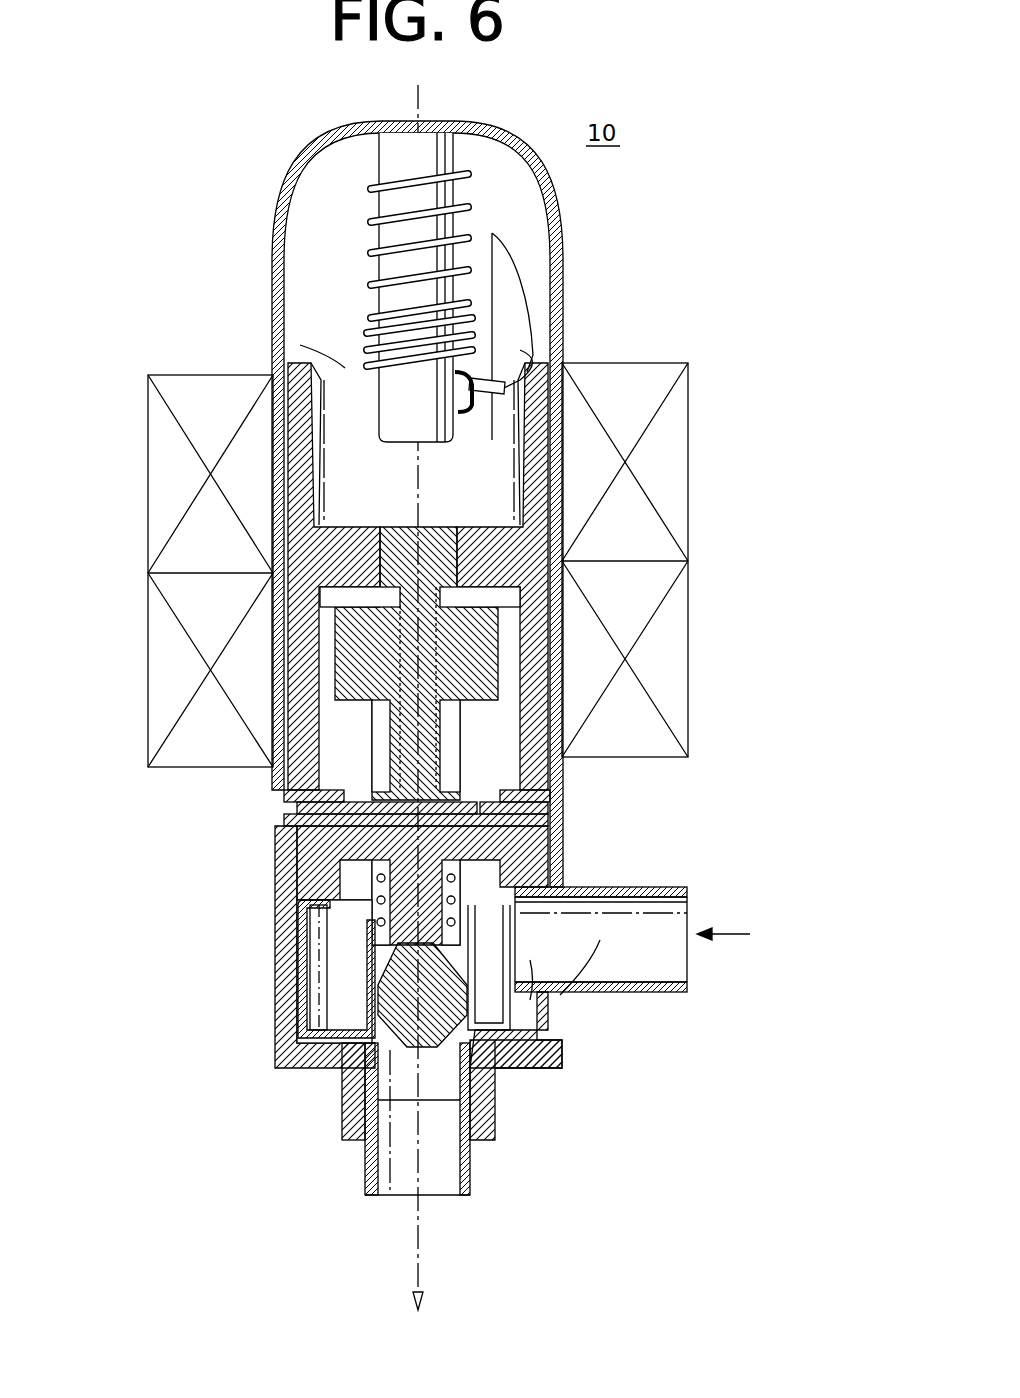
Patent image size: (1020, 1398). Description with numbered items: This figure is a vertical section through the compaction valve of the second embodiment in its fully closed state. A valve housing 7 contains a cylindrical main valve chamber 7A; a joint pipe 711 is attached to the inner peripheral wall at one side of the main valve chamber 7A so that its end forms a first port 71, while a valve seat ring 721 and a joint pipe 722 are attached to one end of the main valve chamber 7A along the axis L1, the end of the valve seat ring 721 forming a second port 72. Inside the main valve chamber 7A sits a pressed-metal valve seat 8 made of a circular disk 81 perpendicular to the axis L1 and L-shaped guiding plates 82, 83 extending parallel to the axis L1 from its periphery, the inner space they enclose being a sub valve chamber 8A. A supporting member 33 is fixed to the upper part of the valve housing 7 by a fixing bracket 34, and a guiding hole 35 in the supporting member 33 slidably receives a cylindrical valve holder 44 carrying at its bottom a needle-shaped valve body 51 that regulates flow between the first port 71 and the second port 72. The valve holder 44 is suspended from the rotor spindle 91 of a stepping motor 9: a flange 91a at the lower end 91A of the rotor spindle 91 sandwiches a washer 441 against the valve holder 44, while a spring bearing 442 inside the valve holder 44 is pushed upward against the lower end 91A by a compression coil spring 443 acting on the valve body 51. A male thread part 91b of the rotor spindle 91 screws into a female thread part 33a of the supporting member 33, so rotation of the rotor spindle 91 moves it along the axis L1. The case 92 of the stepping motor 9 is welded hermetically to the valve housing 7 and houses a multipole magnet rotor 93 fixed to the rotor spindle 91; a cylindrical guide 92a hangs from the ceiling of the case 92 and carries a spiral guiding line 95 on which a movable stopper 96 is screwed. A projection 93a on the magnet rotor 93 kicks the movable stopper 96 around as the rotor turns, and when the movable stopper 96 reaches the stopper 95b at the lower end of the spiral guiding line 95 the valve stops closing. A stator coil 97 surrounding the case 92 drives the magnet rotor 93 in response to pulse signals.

The stepping motor 9 is at (716, 497).
The case 92 is at (556, 480).
The guide 92a is at (398, 163).
The magnet rotor 93 is at (297, 551).
The projection 93a is at (508, 313).
The spiral guiding line 95 is at (372, 256).
The stopper 95b is at (500, 395).
The movable stopper 96 is at (355, 345).
The stator coil 97 is at (678, 434).
The rotor spindle 91 is at (482, 668).
The flange 91a is at (300, 818).
The lower end 91A is at (298, 830).
The male thread part 91b is at (340, 750).
The supporting member 33 is at (508, 773).
The female thread part 33a is at (400, 650).
The fixing bracket 34 is at (545, 803).
The guiding hole 35 is at (462, 745).
The valve holder 44 is at (560, 832).
The washer 441 is at (295, 793).
The spring bearing 442 is at (555, 868).
The compression coil spring 443 is at (372, 866).
The valve housing 7 is at (278, 950).
The main valve chamber 7A is at (320, 893).
The valve seat 8 is at (280, 1020).
The sub valve chamber 8A is at (330, 962).
The circular disk 81 is at (325, 1063).
The guiding plate 82 is at (350, 985).
The guiding plate 83 is at (592, 987).
The valve body 51 is at (355, 1070).
The first port 71 is at (570, 990).
The joint pipe 711 is at (645, 887).
The second port 72 is at (500, 1080).
The valve seat ring 721 is at (495, 1115).
The joint pipe 722 is at (472, 1160).
The axis L1 is at (414, 1218).